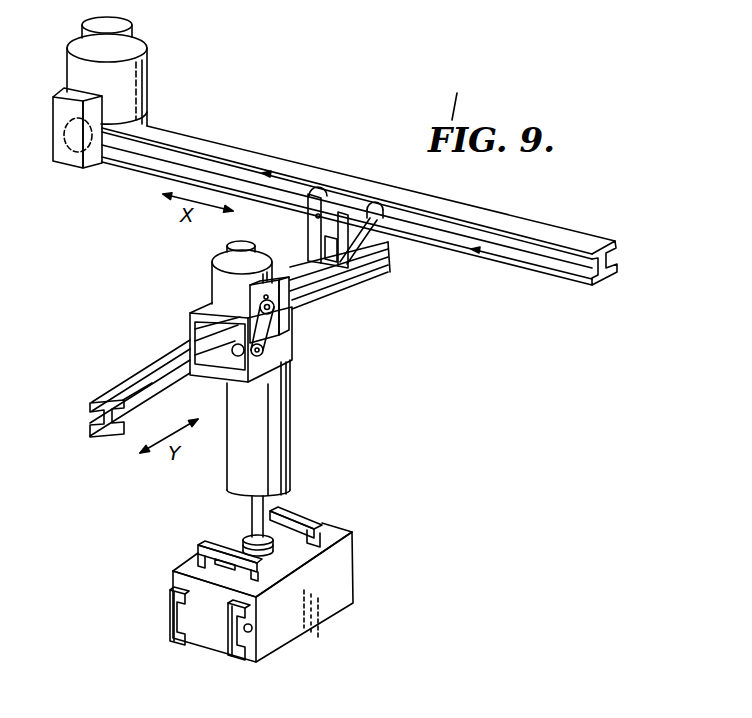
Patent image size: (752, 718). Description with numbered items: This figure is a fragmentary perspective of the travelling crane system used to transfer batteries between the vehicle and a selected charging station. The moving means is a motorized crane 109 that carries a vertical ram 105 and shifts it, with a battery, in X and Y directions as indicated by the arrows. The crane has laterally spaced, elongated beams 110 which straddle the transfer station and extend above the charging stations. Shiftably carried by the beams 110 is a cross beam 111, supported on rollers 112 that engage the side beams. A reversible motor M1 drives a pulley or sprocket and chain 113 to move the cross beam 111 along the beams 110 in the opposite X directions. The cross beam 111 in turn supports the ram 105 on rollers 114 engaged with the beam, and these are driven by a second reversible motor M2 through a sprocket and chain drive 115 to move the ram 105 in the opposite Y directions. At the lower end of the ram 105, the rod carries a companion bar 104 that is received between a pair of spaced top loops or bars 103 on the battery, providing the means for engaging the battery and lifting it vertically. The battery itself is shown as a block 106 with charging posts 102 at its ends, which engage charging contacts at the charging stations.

The reversible motor M1 is at (149, 62).
The reversible motor M2 is at (215, 276).
The charging posts 102 is at (253, 631).
The top loops or bars 103 is at (197, 549).
The companion bar 104 is at (278, 546).
The vertical ram 105 is at (290, 415).
The base block 106 is at (168, 612).
The motorized crane 109 is at (350, 163).
The elongated beams 110 is at (522, 221).
The cross beam 111 is at (122, 387).
The rollers 112 is at (333, 191).
The pulley or sprocket and chain 113 is at (177, 146).
The rollers 114 is at (232, 347).
The sprocket and chain drive 115 is at (281, 336).